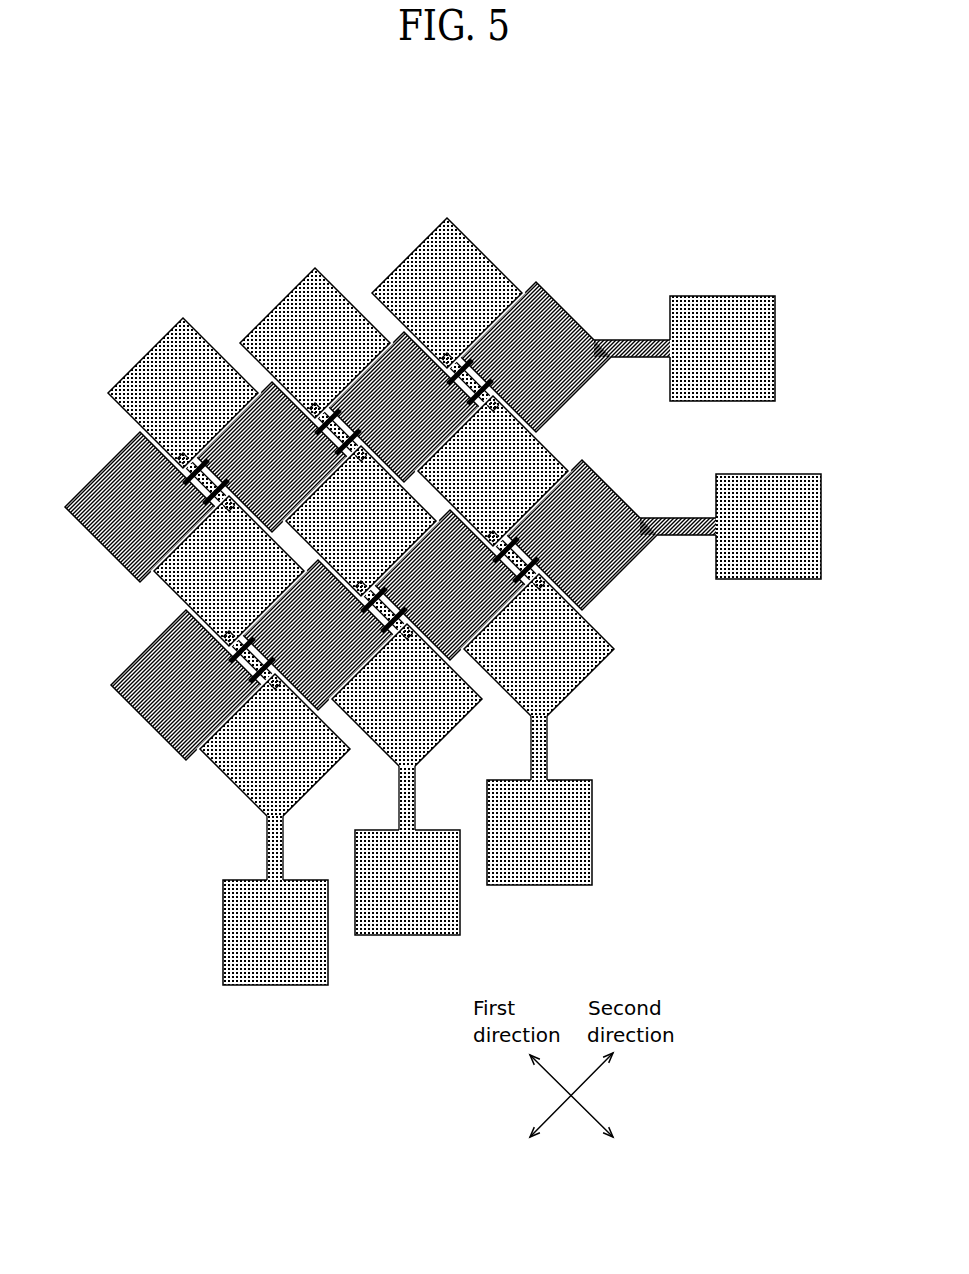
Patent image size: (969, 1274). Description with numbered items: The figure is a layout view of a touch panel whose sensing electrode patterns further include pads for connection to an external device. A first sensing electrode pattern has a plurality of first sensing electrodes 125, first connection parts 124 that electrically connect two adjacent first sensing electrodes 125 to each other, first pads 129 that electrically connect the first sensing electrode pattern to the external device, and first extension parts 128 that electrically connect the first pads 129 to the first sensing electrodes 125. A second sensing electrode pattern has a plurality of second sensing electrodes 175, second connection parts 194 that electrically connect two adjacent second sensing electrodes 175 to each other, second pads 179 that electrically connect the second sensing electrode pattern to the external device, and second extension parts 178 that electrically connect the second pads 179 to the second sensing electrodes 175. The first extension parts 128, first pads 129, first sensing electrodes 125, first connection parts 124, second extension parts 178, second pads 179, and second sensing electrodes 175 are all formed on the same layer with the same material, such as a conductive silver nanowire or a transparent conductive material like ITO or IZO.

The first sensing electrode 125 is at (400, 290).
The second sensing electrode 175 is at (566, 387).
The first connection part 124 is at (538, 558).
The second connection part 194 is at (447, 365).
The second extension part 178 is at (628, 340).
The second pad 179 is at (775, 348).
The first extension part 128 is at (547, 745).
The first pad 129 is at (592, 830).